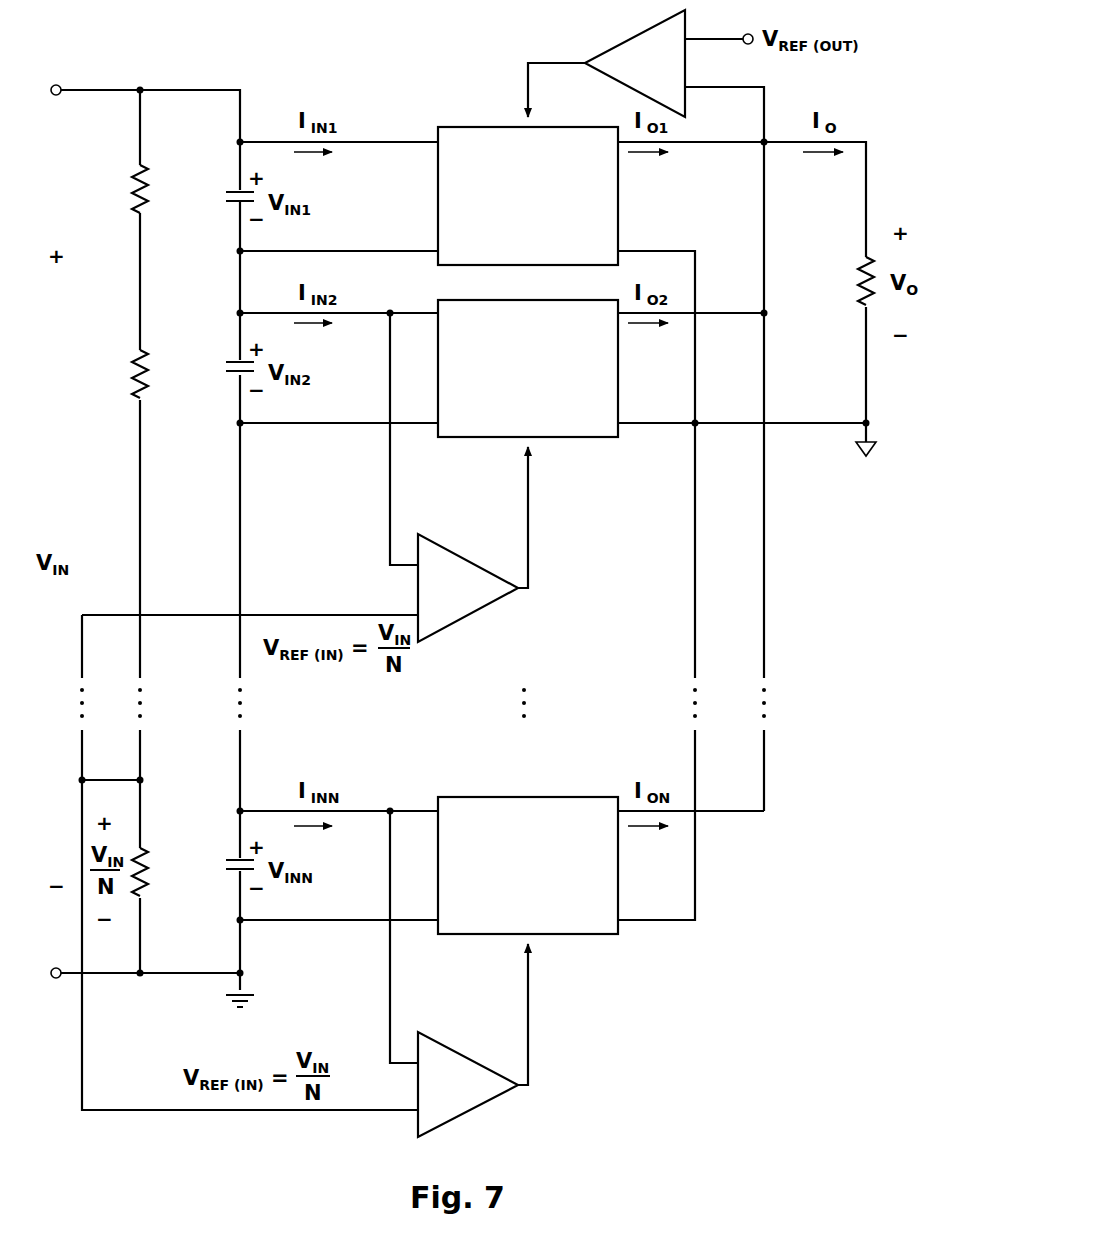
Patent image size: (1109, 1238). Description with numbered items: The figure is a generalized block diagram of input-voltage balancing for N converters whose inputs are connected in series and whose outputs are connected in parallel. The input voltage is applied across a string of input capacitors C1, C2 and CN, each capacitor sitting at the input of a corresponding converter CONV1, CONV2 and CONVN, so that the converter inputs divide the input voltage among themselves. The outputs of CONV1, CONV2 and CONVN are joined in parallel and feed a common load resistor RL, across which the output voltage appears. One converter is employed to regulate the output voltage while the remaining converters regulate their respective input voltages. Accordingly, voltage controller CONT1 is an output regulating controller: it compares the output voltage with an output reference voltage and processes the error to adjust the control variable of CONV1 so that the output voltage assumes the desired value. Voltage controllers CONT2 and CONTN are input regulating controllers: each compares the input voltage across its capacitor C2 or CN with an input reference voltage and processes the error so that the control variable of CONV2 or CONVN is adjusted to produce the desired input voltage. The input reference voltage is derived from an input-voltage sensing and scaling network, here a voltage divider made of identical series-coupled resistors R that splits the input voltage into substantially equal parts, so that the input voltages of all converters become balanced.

The resistor R is at (151, 531).
The input capacitor C1 is at (222, 203).
The input capacitor C2 is at (222, 373).
The input capacitor CN is at (222, 871).
The load resistor RL is at (844, 281).
The converter CONV1 is at (528, 196).
The converter CONV2 is at (528, 368).
The converter CONVN is at (528, 865).
The voltage controller CONT1 is at (556, 63).
The voltage controller CONT2 is at (517, 544).
The voltage controller CONTN is at (518, 1040).